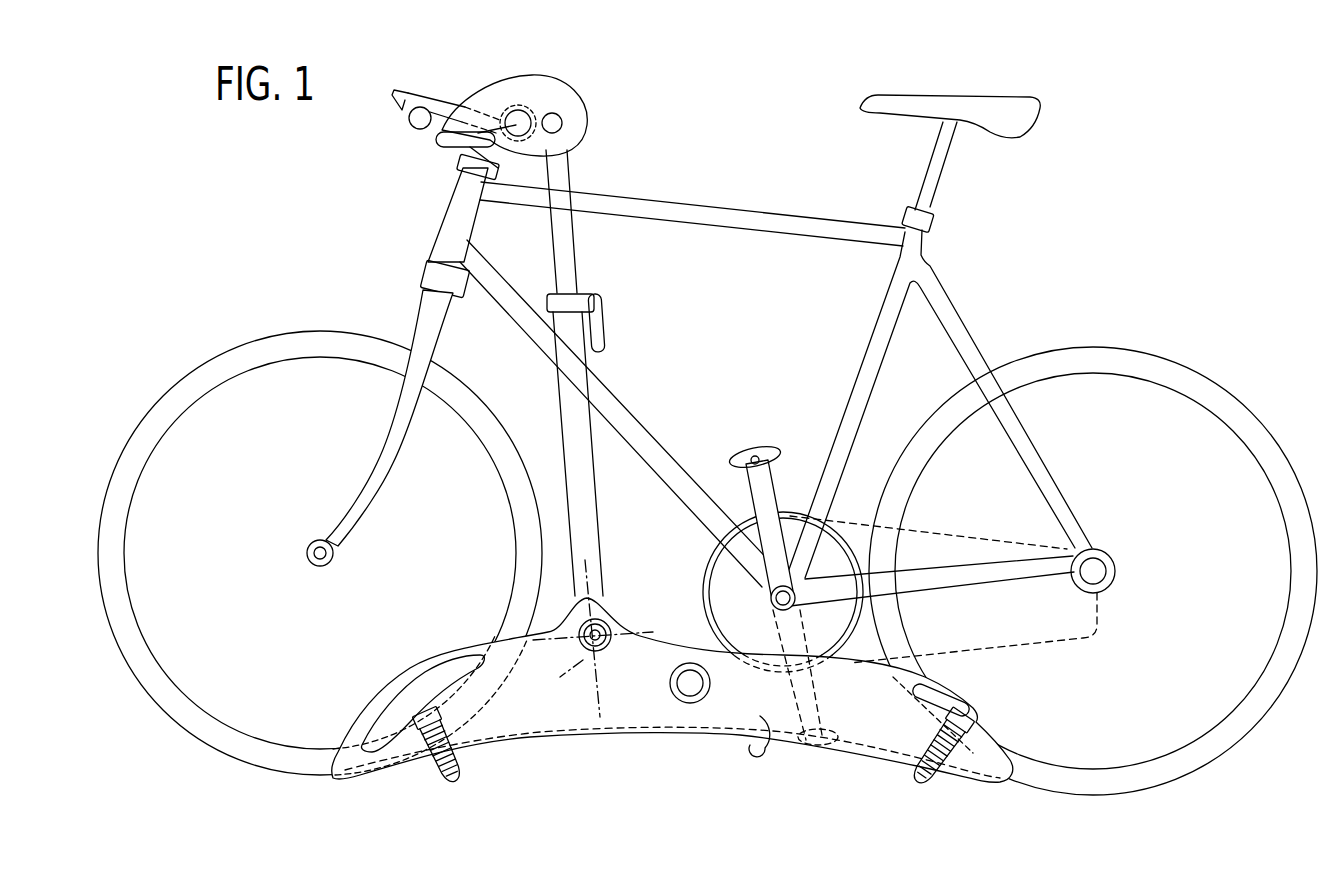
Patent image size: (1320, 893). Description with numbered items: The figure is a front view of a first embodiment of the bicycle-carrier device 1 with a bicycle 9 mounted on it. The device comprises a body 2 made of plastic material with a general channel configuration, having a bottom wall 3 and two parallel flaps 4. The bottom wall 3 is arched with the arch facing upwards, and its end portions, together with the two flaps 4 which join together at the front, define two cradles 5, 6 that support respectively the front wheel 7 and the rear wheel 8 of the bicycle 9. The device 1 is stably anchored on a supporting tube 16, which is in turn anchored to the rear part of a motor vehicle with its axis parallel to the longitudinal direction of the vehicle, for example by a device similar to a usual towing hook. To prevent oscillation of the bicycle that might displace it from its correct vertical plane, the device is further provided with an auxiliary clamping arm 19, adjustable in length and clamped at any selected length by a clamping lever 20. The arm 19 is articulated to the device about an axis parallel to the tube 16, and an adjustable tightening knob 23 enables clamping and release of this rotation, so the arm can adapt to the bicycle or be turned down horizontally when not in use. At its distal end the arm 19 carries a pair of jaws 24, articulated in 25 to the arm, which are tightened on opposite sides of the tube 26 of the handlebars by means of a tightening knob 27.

The bicycle-carrier device 1 is at (659, 531).
The body 2 is at (472, 624).
The bottom wall 3 is at (755, 720).
The flaps 4 is at (660, 718).
The cradle 5 is at (353, 735).
The cradle 6 is at (1003, 740).
The front wheel 7 is at (282, 347).
The rear wheel 8 is at (1143, 363).
The bicycle 9 is at (810, 197).
The supporting tube 16 is at (685, 663).
The auxiliary clamping arm 19 is at (618, 267).
The clamping lever 20 is at (603, 333).
The adjustable tightening knob 23 is at (591, 638).
The jaws 24 is at (566, 93).
The articulation 25 is at (562, 120).
The tube of the handlebars 26 is at (442, 102).
The tightening knob 27 is at (500, 153).